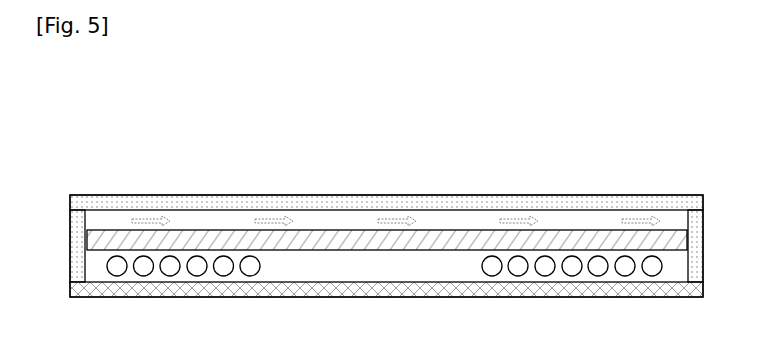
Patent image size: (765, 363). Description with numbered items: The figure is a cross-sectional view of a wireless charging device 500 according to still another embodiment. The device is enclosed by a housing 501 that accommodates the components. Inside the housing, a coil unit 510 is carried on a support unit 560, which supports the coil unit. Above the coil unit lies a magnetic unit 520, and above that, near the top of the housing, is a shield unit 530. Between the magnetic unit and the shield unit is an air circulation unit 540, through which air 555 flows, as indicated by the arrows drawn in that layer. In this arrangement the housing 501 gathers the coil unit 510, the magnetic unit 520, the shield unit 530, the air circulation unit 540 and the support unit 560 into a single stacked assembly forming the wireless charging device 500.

The wireless charging device 500 is at (417, 116).
The housing 501 is at (76, 218).
The coil unit 510 is at (197, 276).
The magnetic unit 520 is at (315, 232).
The shield unit 530 is at (452, 203).
The air circulation unit 540 is at (562, 222).
The air 555 is at (393, 222).
The support unit 560 is at (343, 290).